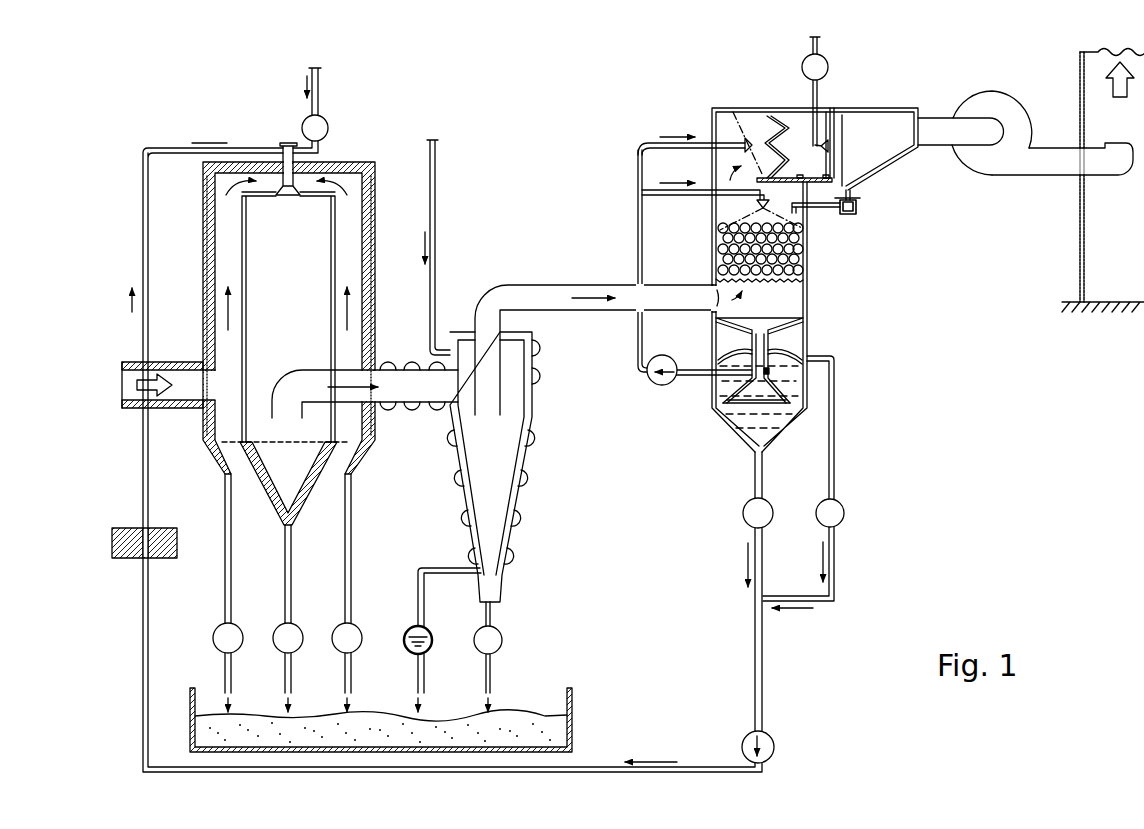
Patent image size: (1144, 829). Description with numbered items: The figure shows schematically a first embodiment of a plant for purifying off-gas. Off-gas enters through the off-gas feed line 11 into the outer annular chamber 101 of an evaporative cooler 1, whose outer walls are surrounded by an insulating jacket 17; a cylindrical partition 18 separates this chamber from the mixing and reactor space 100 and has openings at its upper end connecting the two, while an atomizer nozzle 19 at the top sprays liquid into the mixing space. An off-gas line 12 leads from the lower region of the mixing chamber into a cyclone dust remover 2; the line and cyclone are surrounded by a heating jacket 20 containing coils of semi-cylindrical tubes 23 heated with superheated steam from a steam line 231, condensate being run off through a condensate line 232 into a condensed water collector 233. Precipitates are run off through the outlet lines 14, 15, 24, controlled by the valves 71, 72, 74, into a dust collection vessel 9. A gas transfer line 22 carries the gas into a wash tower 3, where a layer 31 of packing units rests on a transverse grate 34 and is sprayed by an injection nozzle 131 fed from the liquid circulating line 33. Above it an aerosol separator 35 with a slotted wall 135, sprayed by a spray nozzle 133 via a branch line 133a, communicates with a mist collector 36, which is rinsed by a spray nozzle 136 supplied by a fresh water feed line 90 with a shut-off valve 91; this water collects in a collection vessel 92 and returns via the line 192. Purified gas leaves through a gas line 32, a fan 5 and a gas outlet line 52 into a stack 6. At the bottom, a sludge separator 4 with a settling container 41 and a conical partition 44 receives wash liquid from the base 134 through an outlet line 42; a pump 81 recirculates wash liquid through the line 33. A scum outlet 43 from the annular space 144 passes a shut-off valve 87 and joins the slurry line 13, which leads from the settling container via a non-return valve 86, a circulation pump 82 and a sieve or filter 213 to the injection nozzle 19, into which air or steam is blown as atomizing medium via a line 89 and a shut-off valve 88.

The evaporative cooler 1 is at (376, 148).
The cyclone dust remover 2 is at (544, 372).
The wash tower 3 is at (819, 295).
The sludge separator 4 is at (713, 414).
The fan 5 is at (1012, 105).
The stack 6 is at (1077, 258).
The dust collection vessel 9 is at (574, 716).
The off-gas feed line 11 is at (178, 394).
The off-gas line 12 is at (305, 378).
The slurry line 13 is at (149, 665).
The outlet lines 14 is at (225, 507).
The outlet line 15 is at (291, 562).
The insulating jacket 17 is at (205, 221).
The cylindrical partition 18 is at (333, 311).
The atomizer nozzle 19 is at (290, 198).
The heating jacket 20 is at (536, 405).
The gas transfer line 22 is at (560, 290).
The semi-cylindrical tubes 23 is at (420, 410).
The outlet line 24 is at (492, 612).
The layer of packing units 31 is at (808, 262).
The gas line 32 is at (937, 125).
The liquid circulating line 33 is at (638, 242).
The transverse grate 34 is at (720, 300).
The aerosol separator 35 is at (777, 106).
The mist collector 36 is at (836, 110).
The settling container 41 is at (797, 393).
The outlet line 42 is at (770, 347).
The scum outlet 43 is at (836, 470).
The conical partition 44 is at (730, 352).
The gas outlet line 52 is at (1038, 165).
The valve 71 is at (216, 633).
The valve 72 is at (279, 627).
The valve 74 is at (503, 641).
The pump 81 is at (650, 385).
The circulation pump 82 is at (745, 738).
The non-return valve 86 is at (744, 509).
The shut-off valve 87 is at (845, 513).
The shut-off valve 88 is at (328, 121).
The line 89 is at (320, 82).
The fresh water feed line 90 is at (811, 42).
The shut-off valve 91 is at (829, 65).
The collection vessel 92 is at (858, 205).
The mixing and reactor space 100 is at (286, 358).
The outer annular chamber 101 is at (222, 250).
The injection nozzle 131 is at (755, 199).
The spray nozzle 133 is at (742, 133).
The branch line 133a is at (652, 142).
The base 134 is at (790, 325).
The slotted wall 135 is at (793, 147).
The spray nozzle 136 is at (822, 152).
The annular space 144 is at (798, 338).
The line 192 is at (838, 215).
The sieve or filter 213 is at (160, 562).
The steam line 231 is at (437, 192).
The condensate line 232 is at (430, 568).
The condensed water collector 233 is at (432, 653).